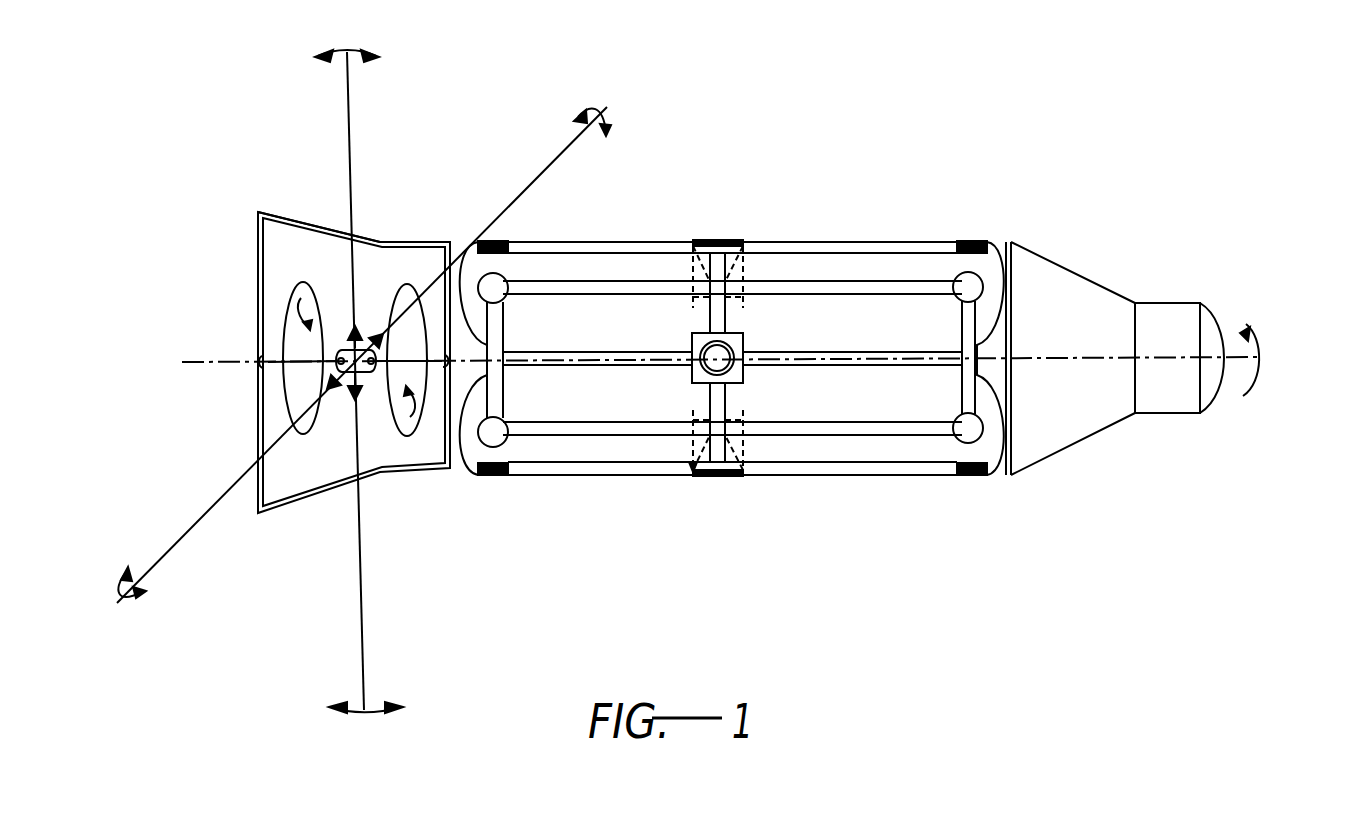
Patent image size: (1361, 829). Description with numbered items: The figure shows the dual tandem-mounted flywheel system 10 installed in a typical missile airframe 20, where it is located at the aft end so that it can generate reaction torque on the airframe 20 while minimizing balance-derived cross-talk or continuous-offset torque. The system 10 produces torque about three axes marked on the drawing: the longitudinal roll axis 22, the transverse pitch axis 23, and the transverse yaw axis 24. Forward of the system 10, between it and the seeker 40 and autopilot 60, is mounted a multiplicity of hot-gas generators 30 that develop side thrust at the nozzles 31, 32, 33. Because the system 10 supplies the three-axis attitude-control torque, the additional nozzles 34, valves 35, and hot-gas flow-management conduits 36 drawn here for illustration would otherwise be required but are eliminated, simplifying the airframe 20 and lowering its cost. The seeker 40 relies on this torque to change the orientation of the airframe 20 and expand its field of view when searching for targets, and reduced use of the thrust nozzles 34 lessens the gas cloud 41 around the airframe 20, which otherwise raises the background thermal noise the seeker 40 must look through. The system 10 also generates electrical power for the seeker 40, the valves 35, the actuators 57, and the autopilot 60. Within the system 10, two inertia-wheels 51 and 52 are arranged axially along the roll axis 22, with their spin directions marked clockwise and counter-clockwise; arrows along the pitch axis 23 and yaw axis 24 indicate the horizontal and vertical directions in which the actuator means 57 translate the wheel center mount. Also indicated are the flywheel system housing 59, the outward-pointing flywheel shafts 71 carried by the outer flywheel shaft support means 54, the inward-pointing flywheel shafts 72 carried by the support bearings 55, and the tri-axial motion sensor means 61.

The system 10 is at (316, 498).
The airframe 20 is at (656, 476).
The roll axis 22 is at (200, 362).
The pitch axis 23 is at (565, 148).
The yaw axis 24 is at (347, 107).
The hot-gas generators 30 is at (853, 263).
The nozzle 31 is at (722, 477).
The nozzle 32 is at (735, 242).
The nozzle 33 is at (694, 382).
The additional nozzles 34 is at (510, 245).
The valves 35 is at (500, 243).
The hot-gas flow-management conduits 36 is at (657, 296).
The seeker 40 is at (1179, 358).
The gas cloud 41 is at (815, 140).
The inertia-wheel 51 is at (292, 305).
The inertia-wheel 52 is at (435, 470).
The outer flywheel shaft support means 54 is at (262, 357).
The inward-pointing shafts support bearings 55 is at (338, 364).
The actuator means 57 is at (356, 325).
The dual tandem-mounted flywheel system housing 59 is at (258, 245).
The autopilot 60 is at (1073, 358).
The tri-axial motion sensor means 61 is at (1037, 358).
The outward-pointing flywheel shafts 71 is at (268, 376).
The inward-pointing flywheel shafts 72 is at (337, 347).